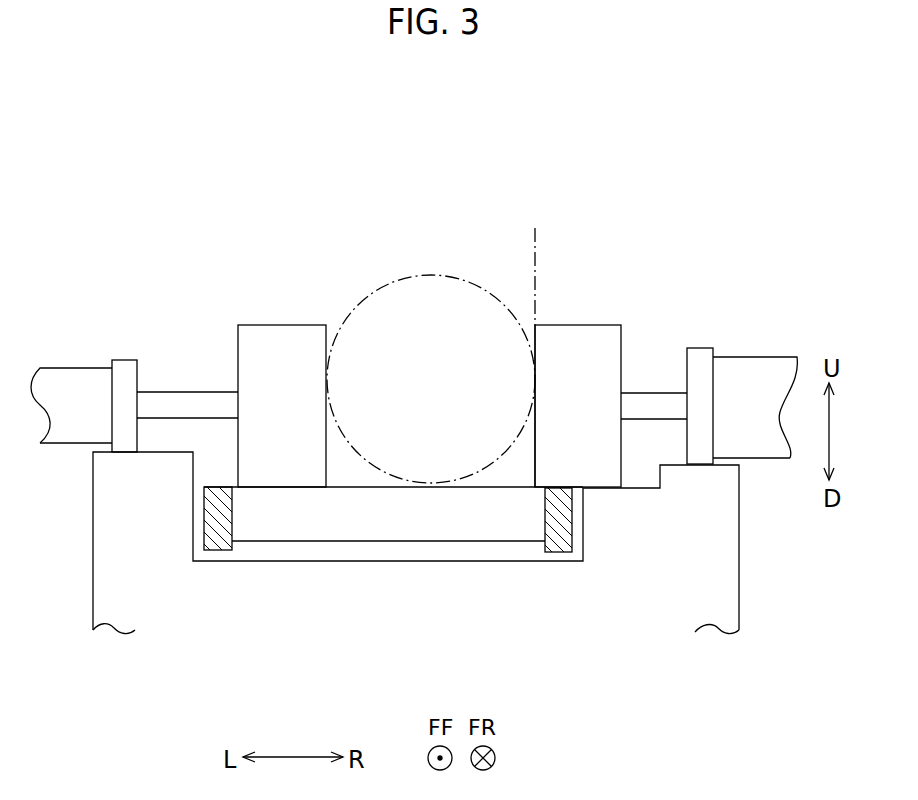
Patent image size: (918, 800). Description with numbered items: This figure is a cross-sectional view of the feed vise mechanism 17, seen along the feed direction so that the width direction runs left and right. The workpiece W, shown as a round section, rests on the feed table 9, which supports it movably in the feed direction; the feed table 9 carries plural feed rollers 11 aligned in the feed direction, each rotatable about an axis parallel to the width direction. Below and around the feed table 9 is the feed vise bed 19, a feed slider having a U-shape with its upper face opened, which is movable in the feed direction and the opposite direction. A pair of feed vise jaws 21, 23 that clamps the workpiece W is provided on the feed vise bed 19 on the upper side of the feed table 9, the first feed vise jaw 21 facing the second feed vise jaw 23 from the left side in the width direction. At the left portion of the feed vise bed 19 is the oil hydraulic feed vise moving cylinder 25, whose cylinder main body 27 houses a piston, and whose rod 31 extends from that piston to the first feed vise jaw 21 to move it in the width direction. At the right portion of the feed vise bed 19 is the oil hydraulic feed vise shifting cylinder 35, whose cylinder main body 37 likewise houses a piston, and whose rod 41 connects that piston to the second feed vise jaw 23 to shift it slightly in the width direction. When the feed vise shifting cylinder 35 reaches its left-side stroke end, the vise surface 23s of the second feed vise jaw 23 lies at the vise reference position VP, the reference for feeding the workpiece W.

The feed table 9 is at (298, 540).
The feed rollers 11 is at (388, 532).
The feed vise mechanism 17 is at (414, 363).
The feed vise bed 19 is at (93, 562).
The first feed vise jaw 21 is at (283, 325).
The second feed vise jaw 23 is at (593, 330).
The vise surface 23s is at (532, 448).
The feed vise moving cylinder 25 is at (75, 367).
The cylinder main body 27 is at (60, 442).
The rod 31 is at (188, 398).
The feed vise shifting cylinder 35 is at (747, 355).
The cylinder main body 37 is at (771, 456).
The rod 41 is at (655, 398).
The workpiece W is at (427, 273).
The vise reference position VP is at (535, 233).